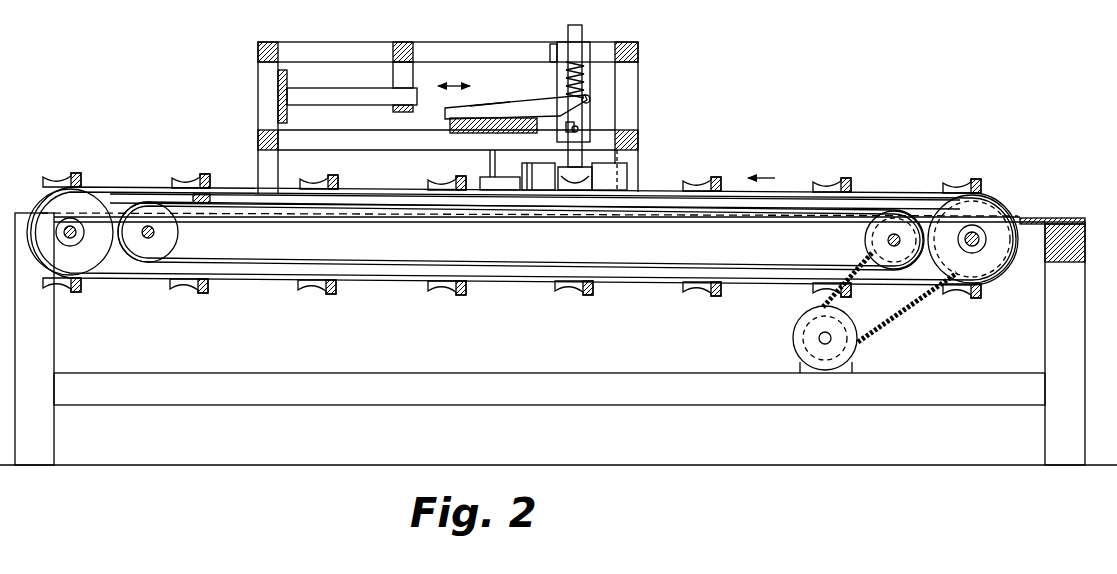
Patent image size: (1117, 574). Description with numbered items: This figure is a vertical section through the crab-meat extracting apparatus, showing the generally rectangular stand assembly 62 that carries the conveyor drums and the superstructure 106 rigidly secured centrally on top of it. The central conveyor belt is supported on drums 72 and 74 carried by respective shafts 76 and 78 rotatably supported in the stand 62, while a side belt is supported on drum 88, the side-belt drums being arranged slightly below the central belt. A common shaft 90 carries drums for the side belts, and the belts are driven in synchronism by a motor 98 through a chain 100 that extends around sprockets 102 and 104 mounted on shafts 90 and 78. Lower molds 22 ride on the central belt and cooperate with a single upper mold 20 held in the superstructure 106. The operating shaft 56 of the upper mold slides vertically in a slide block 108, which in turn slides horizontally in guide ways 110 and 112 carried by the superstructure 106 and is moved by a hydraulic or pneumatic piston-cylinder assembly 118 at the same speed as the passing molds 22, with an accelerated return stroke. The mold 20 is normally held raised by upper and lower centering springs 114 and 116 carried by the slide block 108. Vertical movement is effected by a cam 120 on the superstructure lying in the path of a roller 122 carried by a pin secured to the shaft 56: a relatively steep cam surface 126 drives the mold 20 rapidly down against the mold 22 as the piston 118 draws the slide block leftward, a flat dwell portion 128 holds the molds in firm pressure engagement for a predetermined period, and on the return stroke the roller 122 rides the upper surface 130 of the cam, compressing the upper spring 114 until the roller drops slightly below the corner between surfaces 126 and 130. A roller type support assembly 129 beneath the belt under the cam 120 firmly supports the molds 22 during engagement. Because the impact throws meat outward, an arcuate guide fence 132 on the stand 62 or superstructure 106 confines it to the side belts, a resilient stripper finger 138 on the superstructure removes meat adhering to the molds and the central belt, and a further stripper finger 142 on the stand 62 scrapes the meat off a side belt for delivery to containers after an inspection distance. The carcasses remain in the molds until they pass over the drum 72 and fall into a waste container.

The upper mold 20 is at (590, 165).
The molds 22 is at (703, 176).
The operating shaft 56 is at (584, 33).
The stand assembly 62 is at (1035, 220).
The drum 72 is at (90, 230).
The drum 74 is at (962, 208).
The shaft 76 is at (67, 228).
The shaft 78 is at (983, 243).
The drum 88 is at (167, 237).
The common shaft 90 is at (887, 241).
The motor 98 is at (833, 347).
The chain 100 is at (907, 312).
The sprocket 102 is at (895, 208).
The sprocket 104 is at (997, 223).
The superstructure 106 is at (641, 42).
The slide block 108 is at (556, 60).
The guide way 110 is at (430, 46).
The guide way 112 is at (369, 142).
The upper centering spring 114 is at (591, 77).
The lower centering spring 116 is at (580, 134).
The piston-cylinder assembly 118 is at (352, 100).
The cam 120 is at (530, 107).
The roller 122 is at (567, 125).
The cam surface 126 is at (592, 103).
The dwell portion 128 is at (469, 128).
The roller type support assembly 129 is at (476, 200).
The upper surface of the cam 130 is at (496, 105).
The arcuate guide fence 132 is at (620, 182).
The stripper finger 138 is at (522, 195).
The stripper finger 142 is at (227, 197).